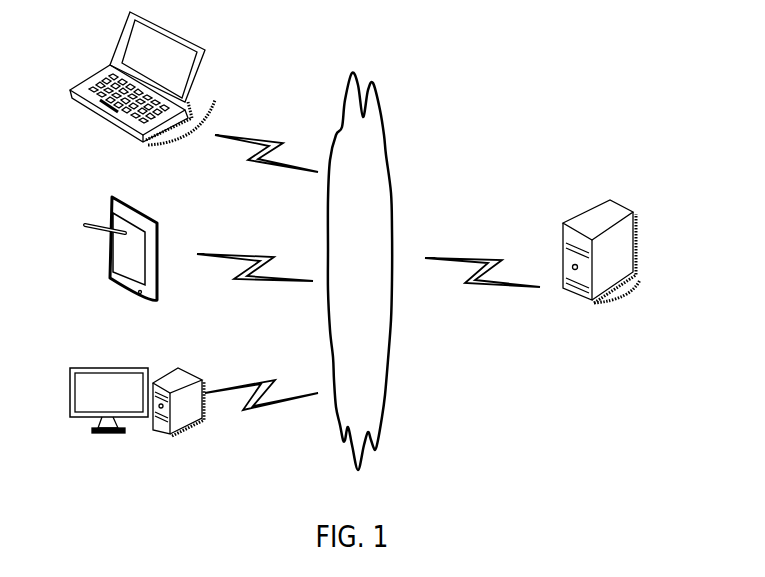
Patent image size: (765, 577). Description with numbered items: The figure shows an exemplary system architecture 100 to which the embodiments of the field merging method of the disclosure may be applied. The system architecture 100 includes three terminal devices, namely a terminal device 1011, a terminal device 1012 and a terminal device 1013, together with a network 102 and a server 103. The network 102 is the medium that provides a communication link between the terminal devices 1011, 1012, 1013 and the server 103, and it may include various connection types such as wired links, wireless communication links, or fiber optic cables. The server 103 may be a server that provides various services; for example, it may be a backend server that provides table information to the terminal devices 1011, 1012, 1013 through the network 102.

The system architecture 100 is at (524, 99).
The terminal device 1011 is at (142, 92).
The terminal device 1012 is at (121, 267).
The terminal device 1013 is at (137, 422).
The network 102 is at (360, 271).
The server 103 is at (601, 269).